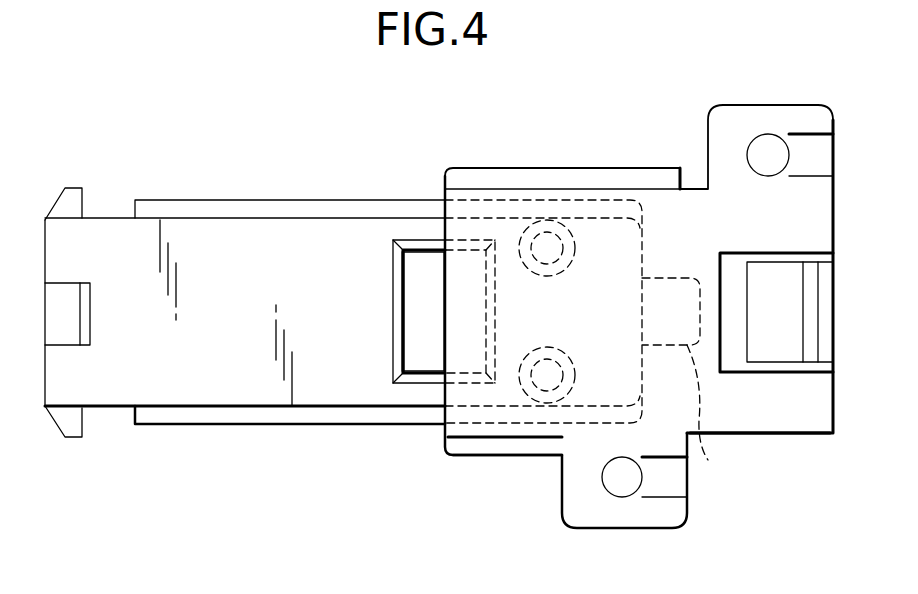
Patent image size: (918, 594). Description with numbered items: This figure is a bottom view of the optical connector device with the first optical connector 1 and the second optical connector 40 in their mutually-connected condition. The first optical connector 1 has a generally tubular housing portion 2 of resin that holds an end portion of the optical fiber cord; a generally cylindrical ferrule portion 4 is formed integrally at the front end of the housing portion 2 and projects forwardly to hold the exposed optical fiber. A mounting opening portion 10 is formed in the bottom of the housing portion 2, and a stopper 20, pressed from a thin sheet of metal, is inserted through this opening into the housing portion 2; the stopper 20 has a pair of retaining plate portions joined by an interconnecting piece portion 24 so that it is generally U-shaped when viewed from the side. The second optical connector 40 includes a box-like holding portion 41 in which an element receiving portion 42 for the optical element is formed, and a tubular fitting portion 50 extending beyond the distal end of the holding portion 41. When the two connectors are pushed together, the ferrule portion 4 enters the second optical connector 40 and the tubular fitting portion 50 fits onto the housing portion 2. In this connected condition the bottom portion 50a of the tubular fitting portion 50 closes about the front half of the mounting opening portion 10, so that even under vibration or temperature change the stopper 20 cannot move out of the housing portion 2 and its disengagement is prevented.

The first optical connector 1 is at (286, 170).
The housing portion 2 is at (228, 390).
The ferrule portion 4 is at (706, 417).
The mounting opening portion 10 is at (415, 322).
The stopper 20 is at (415, 250).
The interconnecting piece portion 24 is at (416, 278).
The second optical connector 40 is at (576, 146).
The holding portion 41 is at (775, 437).
The element receiving portion 42 is at (792, 331).
The tubular fitting portion 50 is at (500, 437).
The bottom portion 50a is at (613, 326).